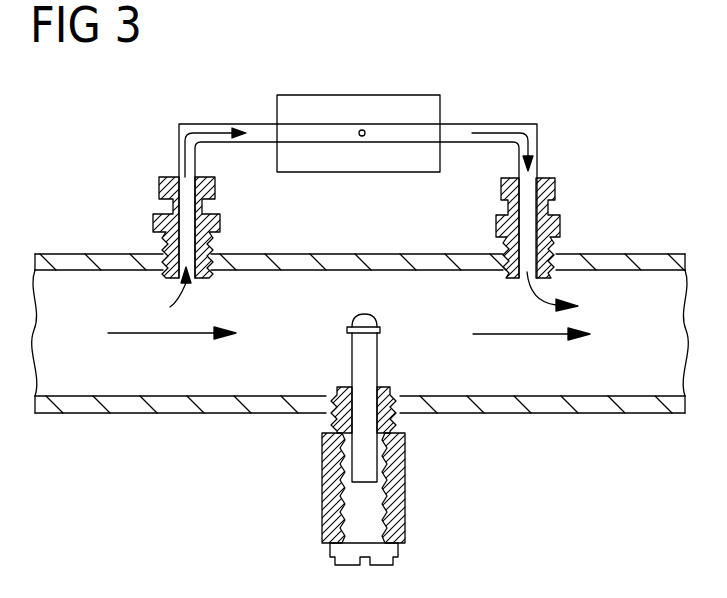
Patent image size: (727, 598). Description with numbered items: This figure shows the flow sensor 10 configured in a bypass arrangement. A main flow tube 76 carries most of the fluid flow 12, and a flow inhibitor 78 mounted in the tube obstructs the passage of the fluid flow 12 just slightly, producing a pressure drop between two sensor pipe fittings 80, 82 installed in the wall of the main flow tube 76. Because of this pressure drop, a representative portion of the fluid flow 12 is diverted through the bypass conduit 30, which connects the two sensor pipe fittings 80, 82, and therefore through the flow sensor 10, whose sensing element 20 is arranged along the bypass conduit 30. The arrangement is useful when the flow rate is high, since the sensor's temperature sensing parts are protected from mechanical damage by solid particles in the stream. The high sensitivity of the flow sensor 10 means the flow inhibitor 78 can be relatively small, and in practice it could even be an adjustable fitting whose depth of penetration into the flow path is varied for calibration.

The flow sensor 10 is at (254, 68).
The fluid flow 12 is at (195, 334).
The flow sensor 20 is at (378, 128).
The bypass conduit 30 is at (193, 123).
The main flow tube 76 is at (125, 402).
The flow inhibitor 78 is at (395, 515).
The sensor pipe fitting 80 is at (153, 225).
The sensor pipe fitting 82 is at (558, 225).